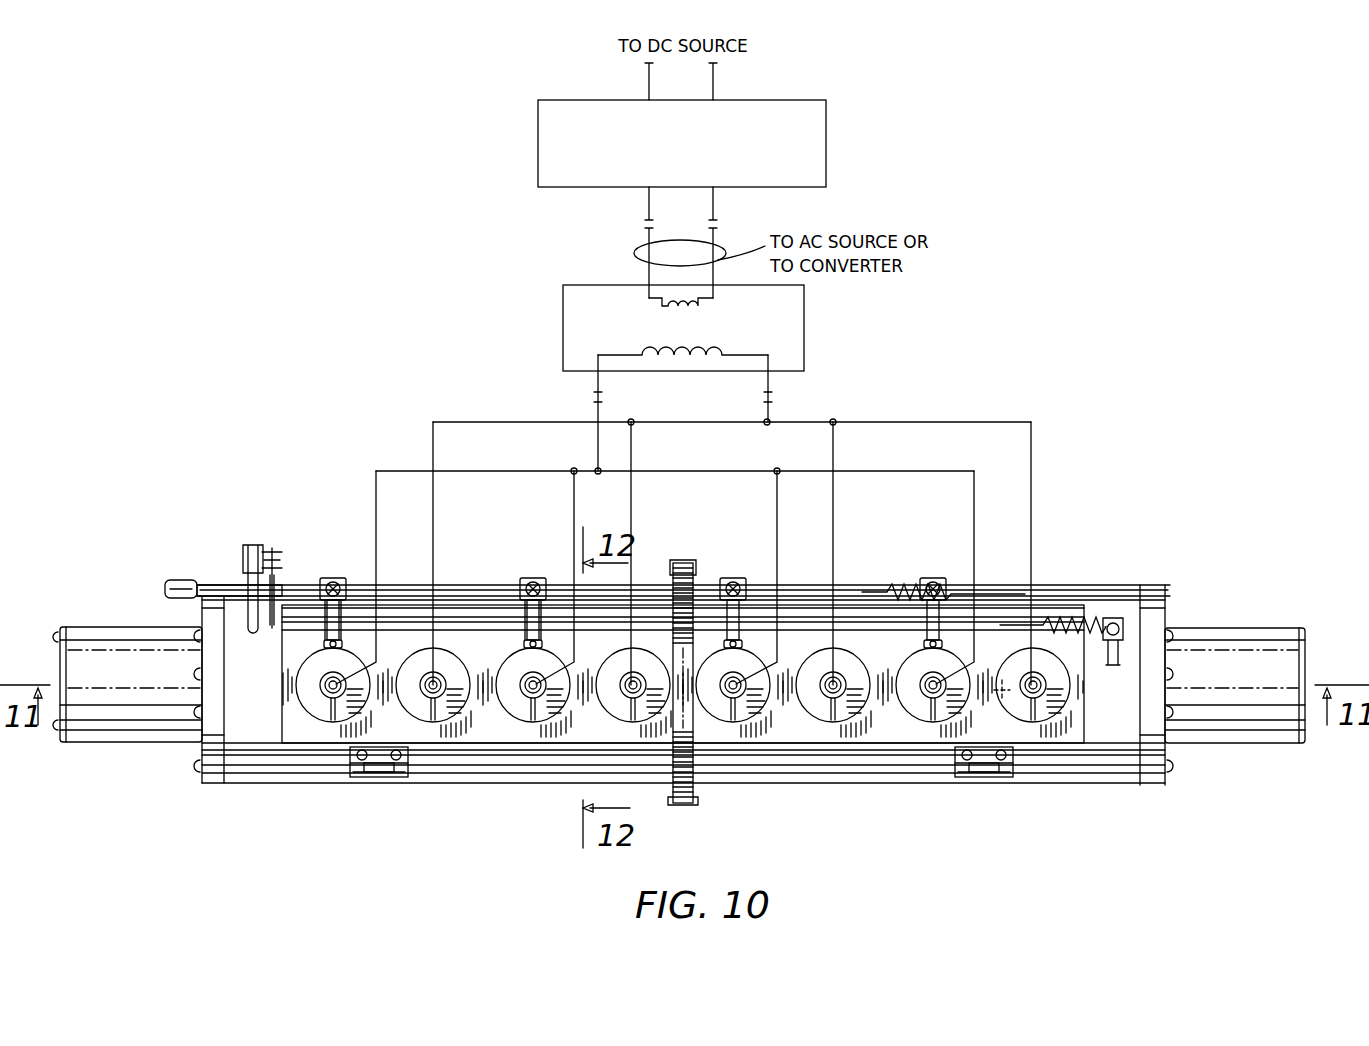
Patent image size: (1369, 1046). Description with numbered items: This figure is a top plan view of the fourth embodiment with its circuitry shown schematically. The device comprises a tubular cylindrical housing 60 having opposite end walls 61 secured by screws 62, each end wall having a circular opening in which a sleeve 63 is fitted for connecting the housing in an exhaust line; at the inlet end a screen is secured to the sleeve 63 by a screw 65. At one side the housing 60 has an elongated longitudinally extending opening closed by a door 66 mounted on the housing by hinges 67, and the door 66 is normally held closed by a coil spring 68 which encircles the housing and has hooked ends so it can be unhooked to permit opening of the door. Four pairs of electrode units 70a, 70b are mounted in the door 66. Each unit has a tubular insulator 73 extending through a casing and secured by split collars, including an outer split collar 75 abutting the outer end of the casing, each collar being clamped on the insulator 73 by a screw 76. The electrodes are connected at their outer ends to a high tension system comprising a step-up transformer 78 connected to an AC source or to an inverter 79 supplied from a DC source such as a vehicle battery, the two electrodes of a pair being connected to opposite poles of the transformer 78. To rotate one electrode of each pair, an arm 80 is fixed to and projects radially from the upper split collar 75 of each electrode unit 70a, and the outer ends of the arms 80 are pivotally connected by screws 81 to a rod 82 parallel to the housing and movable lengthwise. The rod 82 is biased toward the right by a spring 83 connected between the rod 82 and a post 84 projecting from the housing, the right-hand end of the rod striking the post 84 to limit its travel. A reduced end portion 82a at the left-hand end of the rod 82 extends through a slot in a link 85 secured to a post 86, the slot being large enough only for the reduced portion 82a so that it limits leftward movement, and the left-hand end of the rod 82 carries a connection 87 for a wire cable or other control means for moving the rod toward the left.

The tubular cylindrical housing 60 is at (832, 780).
The end wall 61 is at (210, 748).
The screw 62 is at (198, 778).
The sleeve 63 is at (88, 622).
The screw 65 is at (56, 634).
The door 66 is at (495, 730).
The hinge 67 is at (378, 778).
The coil spring 68 is at (688, 808).
The electrode unit 70a is at (318, 728).
The electrode unit 70b is at (430, 728).
The tubular insulator 73 is at (612, 720).
The outer split collar 75 is at (912, 666).
The screw 76 is at (1000, 705).
The step-up transformer 78 is at (804, 325).
The inverter 79 is at (826, 143).
The arm 80 is at (322, 636).
The screw 81 is at (336, 580).
The rod 82 is at (468, 585).
The reduced end portion 82a is at (217, 580).
The spring 83 is at (1065, 610).
The post 84 is at (1125, 625).
The link 85 is at (274, 548).
The post 86 is at (245, 618).
The connection 87 is at (182, 580).